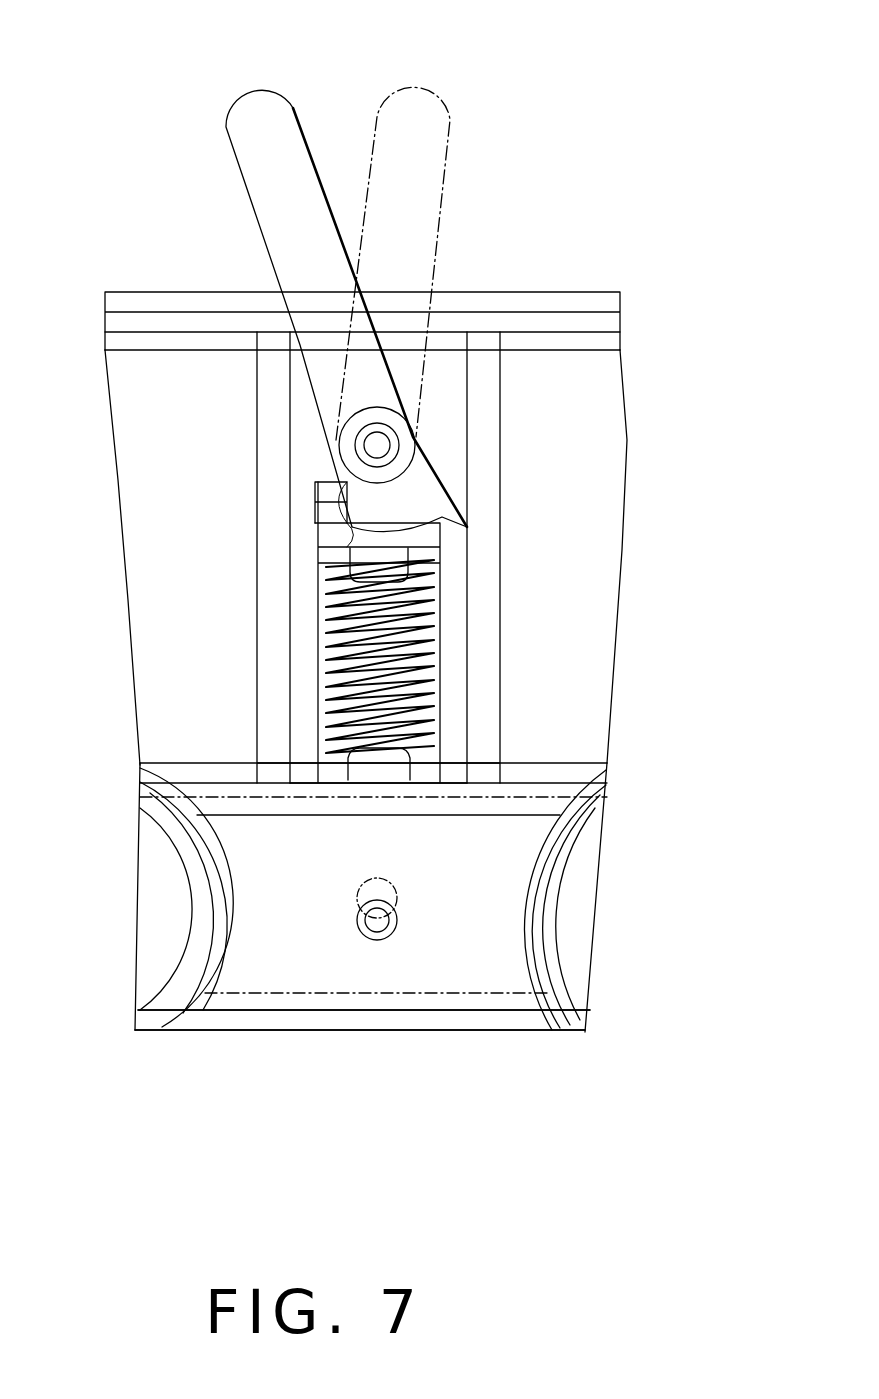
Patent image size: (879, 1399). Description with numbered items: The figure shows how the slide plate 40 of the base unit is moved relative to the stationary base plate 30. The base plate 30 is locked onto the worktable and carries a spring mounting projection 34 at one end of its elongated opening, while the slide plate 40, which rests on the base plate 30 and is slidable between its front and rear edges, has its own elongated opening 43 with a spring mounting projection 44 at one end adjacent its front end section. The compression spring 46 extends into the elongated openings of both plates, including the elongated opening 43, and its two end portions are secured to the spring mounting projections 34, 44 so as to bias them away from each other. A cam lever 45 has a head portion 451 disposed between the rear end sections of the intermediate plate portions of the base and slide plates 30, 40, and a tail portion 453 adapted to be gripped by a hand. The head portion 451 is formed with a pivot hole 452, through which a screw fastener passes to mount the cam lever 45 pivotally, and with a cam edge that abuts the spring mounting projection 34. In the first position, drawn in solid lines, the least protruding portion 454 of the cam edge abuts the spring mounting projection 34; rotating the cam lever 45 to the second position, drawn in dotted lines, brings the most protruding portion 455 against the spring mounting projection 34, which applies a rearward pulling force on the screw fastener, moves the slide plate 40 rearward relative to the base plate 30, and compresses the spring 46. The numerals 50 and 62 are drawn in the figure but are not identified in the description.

The stationary base plate 30 is at (518, 318).
The slide plate 40 is at (579, 352).
The spring mounting projection 34 is at (440, 597).
The elongated opening 43 is at (440, 686).
The spring mounting projection 44 is at (350, 752).
The cam lever 45 is at (262, 92).
The compression spring 46 is at (340, 600).
The base 50 is at (400, 1033).
The cylindrical bore 62 is at (565, 820).
The head portion 451 is at (313, 527).
The pivot hole 452 is at (362, 434).
The tail portion 453 is at (292, 120).
The least protruding portion 454 is at (330, 482).
The most protruding portion 455 is at (440, 520).